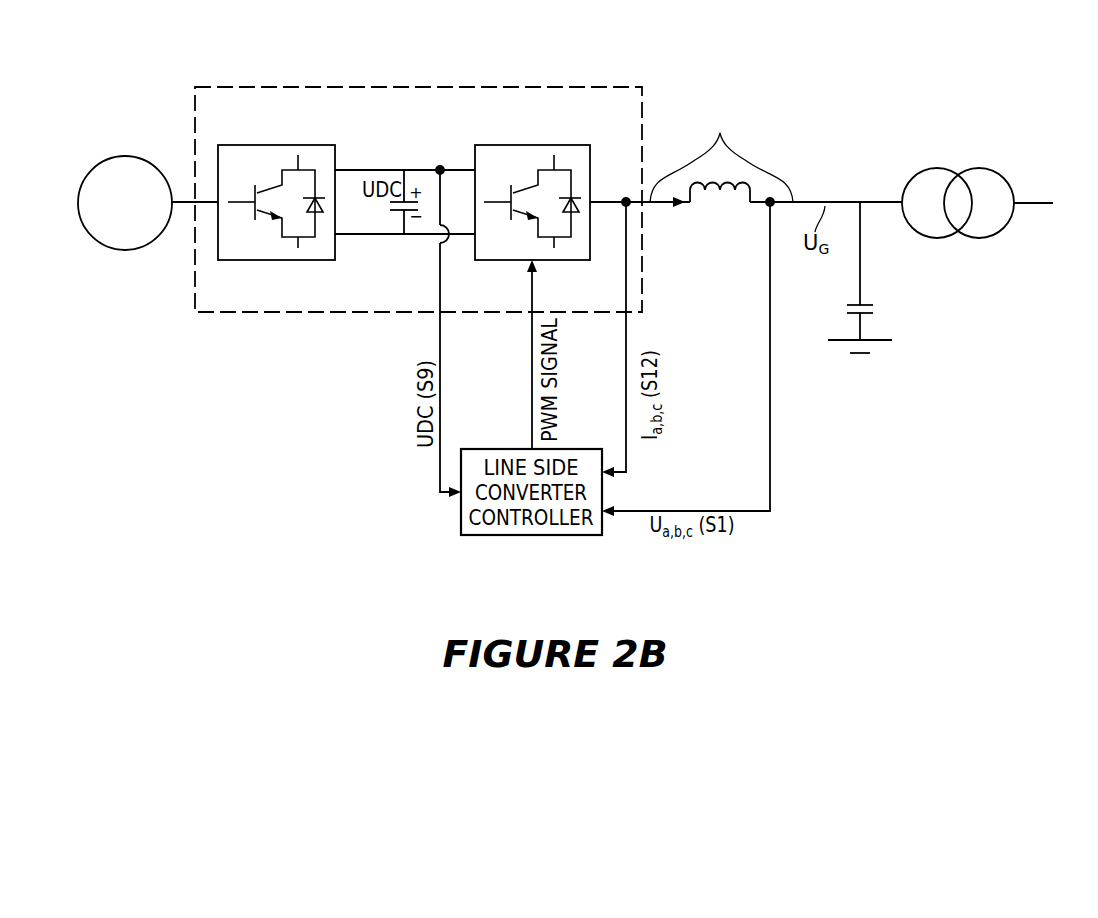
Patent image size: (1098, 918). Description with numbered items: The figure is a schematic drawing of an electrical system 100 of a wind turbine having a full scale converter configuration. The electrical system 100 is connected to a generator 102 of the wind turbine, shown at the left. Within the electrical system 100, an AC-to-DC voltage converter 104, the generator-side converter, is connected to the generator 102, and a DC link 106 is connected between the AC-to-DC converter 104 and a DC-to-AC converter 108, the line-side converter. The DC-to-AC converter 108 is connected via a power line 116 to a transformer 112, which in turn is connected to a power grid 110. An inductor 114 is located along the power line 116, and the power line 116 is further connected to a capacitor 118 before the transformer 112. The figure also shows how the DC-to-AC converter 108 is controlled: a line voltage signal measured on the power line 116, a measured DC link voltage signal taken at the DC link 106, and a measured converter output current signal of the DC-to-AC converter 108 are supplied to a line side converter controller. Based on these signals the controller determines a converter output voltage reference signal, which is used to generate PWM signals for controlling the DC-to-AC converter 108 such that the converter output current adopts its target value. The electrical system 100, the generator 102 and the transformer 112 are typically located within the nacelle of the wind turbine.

The electrical system 100 is at (403, 86).
The generator 102 is at (127, 155).
The AC-to-DC voltage converter 104 is at (276, 144).
The DC link 106 is at (440, 166).
The DC-to-AC converter 108 is at (535, 144).
The power grid 110 is at (1034, 206).
The transformer 112 is at (979, 239).
The inductor 114 is at (719, 194).
The power line 116 is at (721, 154).
The capacitor 118 is at (876, 310).